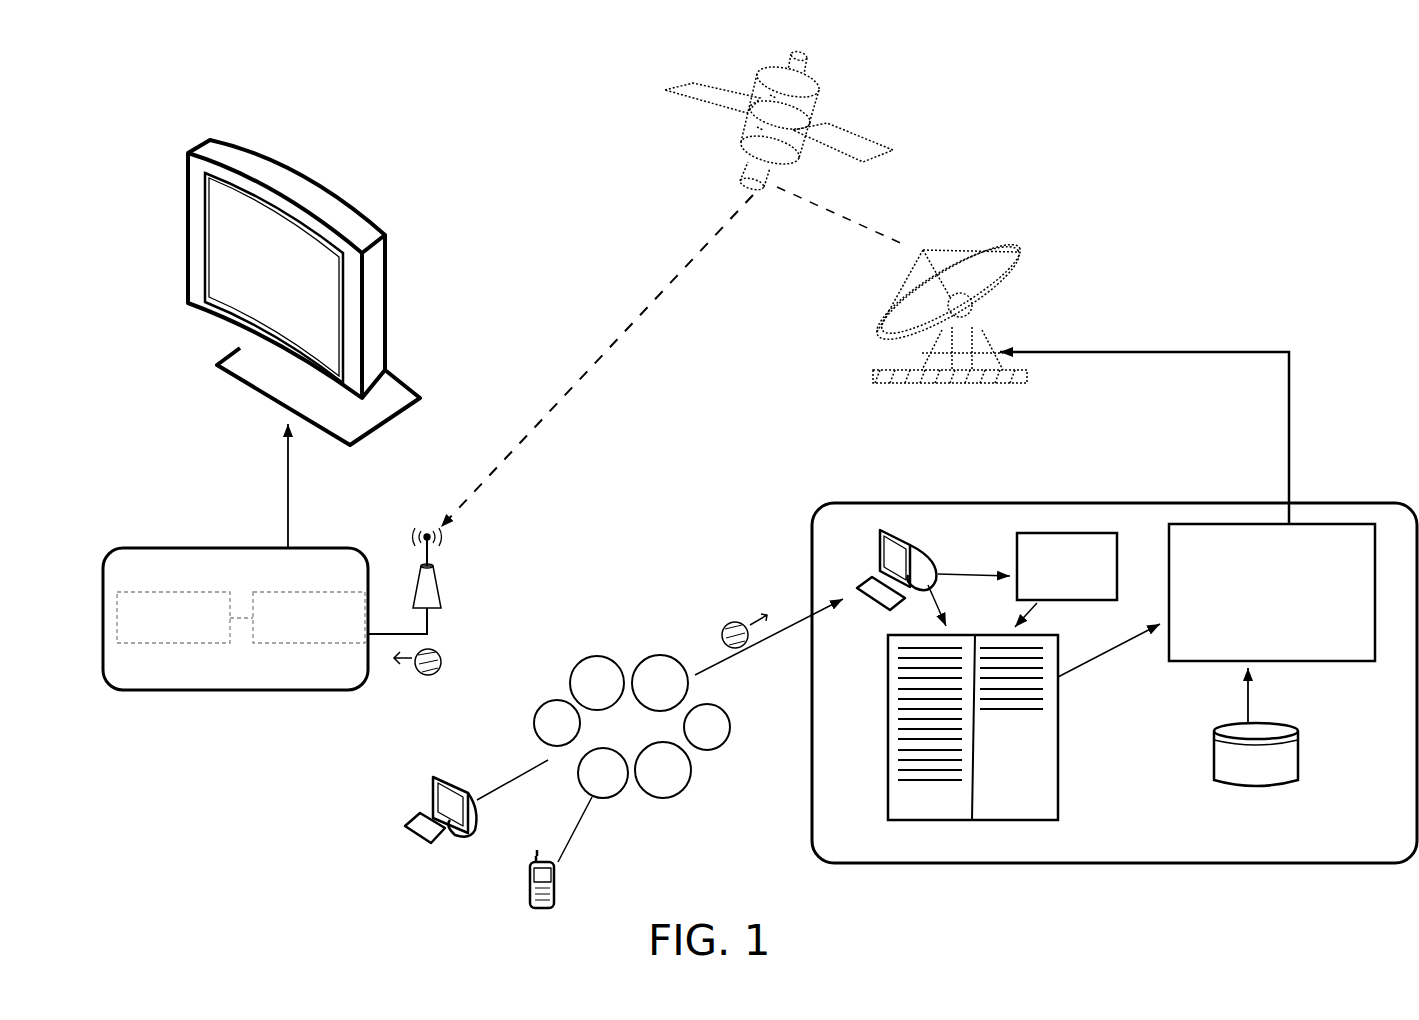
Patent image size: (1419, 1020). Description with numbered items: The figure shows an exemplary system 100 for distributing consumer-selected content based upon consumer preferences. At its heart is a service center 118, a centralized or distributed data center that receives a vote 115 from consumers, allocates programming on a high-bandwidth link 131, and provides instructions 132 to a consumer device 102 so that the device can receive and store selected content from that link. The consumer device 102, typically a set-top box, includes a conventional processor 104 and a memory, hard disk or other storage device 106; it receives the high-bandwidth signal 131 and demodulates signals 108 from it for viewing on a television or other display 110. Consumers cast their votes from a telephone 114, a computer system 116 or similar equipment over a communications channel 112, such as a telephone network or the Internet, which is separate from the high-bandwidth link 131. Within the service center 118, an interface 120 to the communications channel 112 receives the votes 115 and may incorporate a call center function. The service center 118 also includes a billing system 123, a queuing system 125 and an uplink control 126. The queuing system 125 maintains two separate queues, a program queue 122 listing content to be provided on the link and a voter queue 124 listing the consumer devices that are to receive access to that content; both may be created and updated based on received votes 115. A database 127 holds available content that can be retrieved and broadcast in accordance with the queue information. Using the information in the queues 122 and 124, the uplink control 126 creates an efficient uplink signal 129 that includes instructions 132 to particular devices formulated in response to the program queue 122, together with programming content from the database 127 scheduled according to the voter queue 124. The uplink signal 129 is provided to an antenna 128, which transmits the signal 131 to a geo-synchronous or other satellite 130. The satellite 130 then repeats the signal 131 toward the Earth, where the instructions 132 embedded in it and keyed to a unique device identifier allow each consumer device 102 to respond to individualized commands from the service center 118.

The system 100 is at (1225, 158).
The consumer device 102 is at (235, 688).
The processor 104 is at (198, 643).
The storage device 106 is at (290, 643).
The signals 108 is at (288, 482).
The display 110 is at (345, 220).
The communications channel 112 is at (632, 726).
The telephone 114 is at (557, 882).
The vote 115 is at (727, 621).
The computer system 116 is at (425, 846).
The service center 118 is at (1362, 848).
The interface 120 is at (915, 543).
The program queue 122 is at (902, 803).
The billing system 123 is at (1082, 540).
The voter queue 124 is at (1048, 803).
The queuing system 125 is at (970, 828).
The uplink control 126 is at (1272, 592).
The database 127 is at (1256, 727).
The antenna 128 is at (1003, 302).
The uplink signal 129 is at (1210, 350).
The satellite 130 is at (820, 103).
The high-bandwidth link 131 is at (548, 413).
The instructions 132 is at (420, 676).